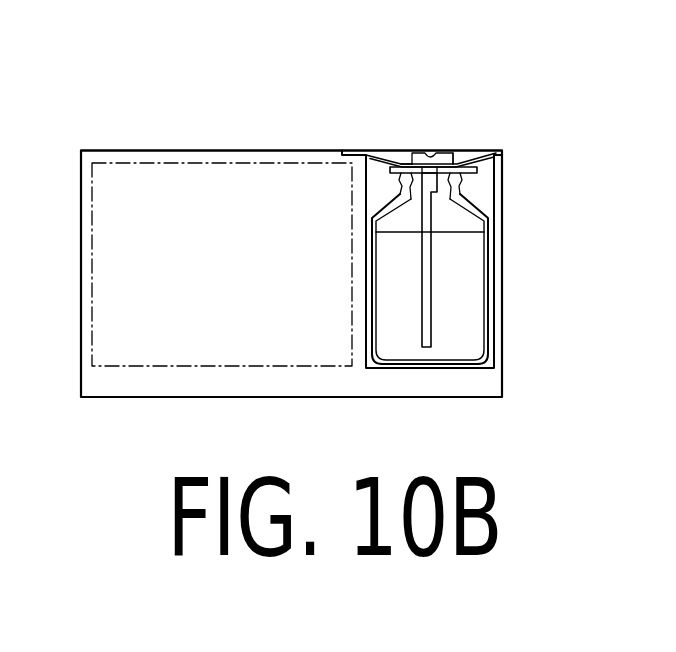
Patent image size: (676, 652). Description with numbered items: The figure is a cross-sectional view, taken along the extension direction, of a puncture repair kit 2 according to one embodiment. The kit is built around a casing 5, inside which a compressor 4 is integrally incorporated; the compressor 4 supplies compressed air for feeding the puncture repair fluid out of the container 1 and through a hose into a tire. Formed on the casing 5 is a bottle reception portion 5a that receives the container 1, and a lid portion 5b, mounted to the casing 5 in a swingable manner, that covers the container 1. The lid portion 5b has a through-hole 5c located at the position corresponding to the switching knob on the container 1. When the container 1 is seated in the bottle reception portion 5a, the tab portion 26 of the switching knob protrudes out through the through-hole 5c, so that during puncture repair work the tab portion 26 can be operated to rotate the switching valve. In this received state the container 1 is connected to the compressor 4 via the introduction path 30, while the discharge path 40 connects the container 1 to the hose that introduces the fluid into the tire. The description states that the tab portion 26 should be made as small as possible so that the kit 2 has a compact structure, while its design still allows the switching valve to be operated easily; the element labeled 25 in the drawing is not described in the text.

The container 1 is at (492, 292).
The puncture repair kit 2 is at (115, 130).
The compressor 4 is at (285, 163).
The casing 5 is at (217, 149).
The bottle reception portion 5a is at (488, 207).
The lid portion 5b is at (497, 152).
The through-hole 5c is at (400, 162).
The cap 25 is at (450, 160).
The tab portion 26 is at (440, 160).
The introduction path 30 is at (477, 169).
The discharge path 40 is at (390, 162).